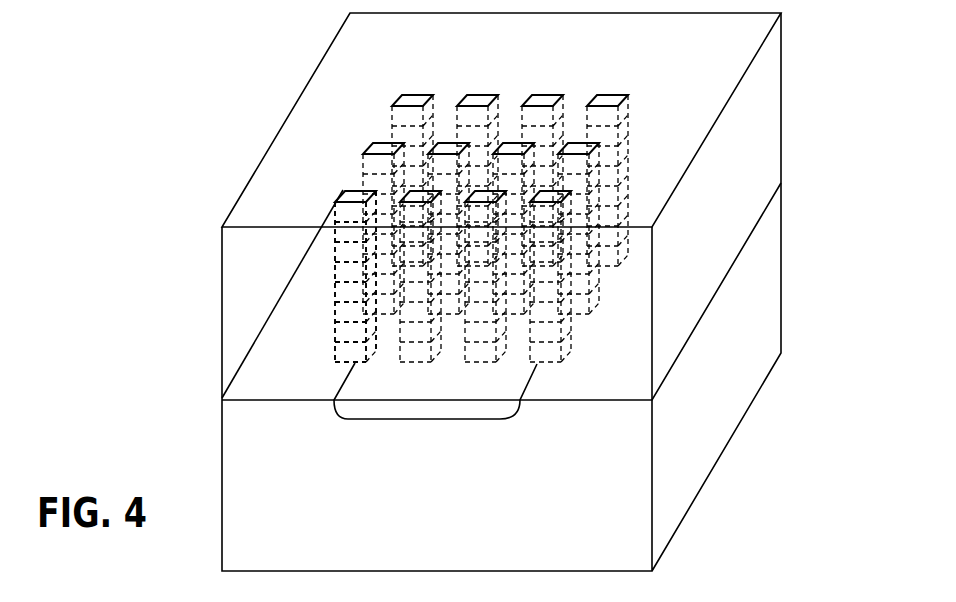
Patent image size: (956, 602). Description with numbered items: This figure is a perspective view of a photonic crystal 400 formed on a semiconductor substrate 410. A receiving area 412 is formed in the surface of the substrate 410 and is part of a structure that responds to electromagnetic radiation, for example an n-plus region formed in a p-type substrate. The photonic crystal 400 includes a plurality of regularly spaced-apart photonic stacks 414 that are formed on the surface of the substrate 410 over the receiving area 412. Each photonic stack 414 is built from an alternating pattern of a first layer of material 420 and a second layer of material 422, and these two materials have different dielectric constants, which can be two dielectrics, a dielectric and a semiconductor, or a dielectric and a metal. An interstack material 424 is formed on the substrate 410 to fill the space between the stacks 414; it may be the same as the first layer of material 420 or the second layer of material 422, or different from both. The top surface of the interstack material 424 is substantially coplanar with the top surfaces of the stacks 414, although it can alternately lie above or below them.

The photonic crystal 400 is at (240, 82).
The semiconductor substrate 410 is at (760, 272).
The receiving area 412 is at (493, 410).
The photonic stacks 414 is at (528, 363).
The first layer of material 420 is at (333, 237).
The second layer of material 422 is at (333, 205).
The interstack material 424 is at (765, 108).